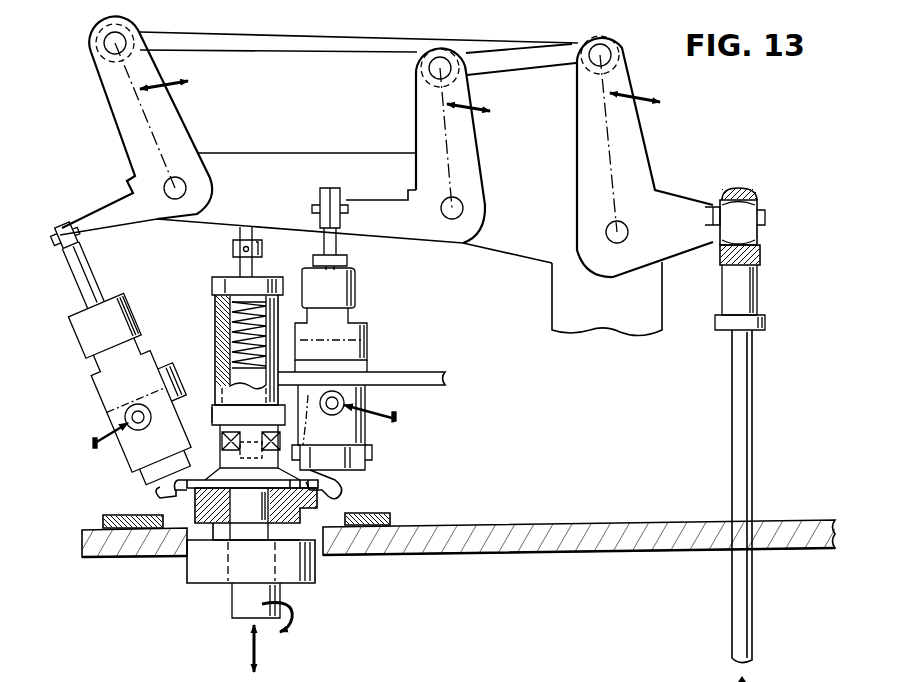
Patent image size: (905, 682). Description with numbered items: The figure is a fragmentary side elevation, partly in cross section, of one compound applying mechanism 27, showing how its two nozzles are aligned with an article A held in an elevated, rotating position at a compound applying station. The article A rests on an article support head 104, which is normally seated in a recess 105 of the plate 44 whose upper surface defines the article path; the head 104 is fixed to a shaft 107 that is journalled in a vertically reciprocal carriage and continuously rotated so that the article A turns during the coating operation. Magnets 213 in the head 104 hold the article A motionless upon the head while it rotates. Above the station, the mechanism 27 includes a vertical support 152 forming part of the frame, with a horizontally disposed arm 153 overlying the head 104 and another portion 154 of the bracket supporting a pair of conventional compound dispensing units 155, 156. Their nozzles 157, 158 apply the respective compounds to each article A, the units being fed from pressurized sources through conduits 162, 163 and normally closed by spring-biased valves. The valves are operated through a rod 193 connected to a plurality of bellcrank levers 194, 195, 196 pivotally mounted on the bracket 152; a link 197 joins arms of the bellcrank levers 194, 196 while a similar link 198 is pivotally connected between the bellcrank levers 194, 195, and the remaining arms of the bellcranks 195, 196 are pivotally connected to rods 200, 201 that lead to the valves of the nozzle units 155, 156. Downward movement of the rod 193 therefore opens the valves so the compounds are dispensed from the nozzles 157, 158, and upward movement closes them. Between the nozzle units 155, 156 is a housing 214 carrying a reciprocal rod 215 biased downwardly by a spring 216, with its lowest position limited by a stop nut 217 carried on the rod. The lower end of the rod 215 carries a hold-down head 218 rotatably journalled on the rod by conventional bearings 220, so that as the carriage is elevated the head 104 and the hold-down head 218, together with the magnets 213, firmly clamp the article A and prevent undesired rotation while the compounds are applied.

The compound applying mechanism 27 is at (685, 163).
The plate 44 is at (556, 522).
The article support head 104 is at (300, 508).
The recess 105 is at (318, 560).
The shaft 107 is at (235, 605).
The vertical support 152 is at (626, 320).
The horizontally disposed arm 153 is at (284, 166).
The portion of the bracket 154 is at (398, 378).
The compound dispensing unit 155 is at (133, 335).
The compound dispensing unit 156 is at (362, 328).
The nozzle 157 is at (160, 495).
The nozzle 158 is at (345, 480).
The conduit 162 is at (95, 440).
The conduit 163 is at (395, 410).
The rod 193 is at (756, 395).
The bellcrank lever 194 is at (630, 132).
The bellcrank lever 195 is at (430, 126).
The bellcrank lever 196 is at (168, 112).
The link 197 is at (382, 44).
The link 198 is at (512, 66).
The rod 200 is at (336, 245).
The rod 201 is at (88, 276).
The magnet 213 is at (178, 540).
The housing 214 is at (215, 314).
The reciprocal rod 215 is at (285, 252).
The spring 216 is at (214, 334).
The stop nut 217 is at (233, 248).
The hold-down head 218 is at (205, 472).
The bearings 220 is at (400, 407).
The article A is at (345, 497).